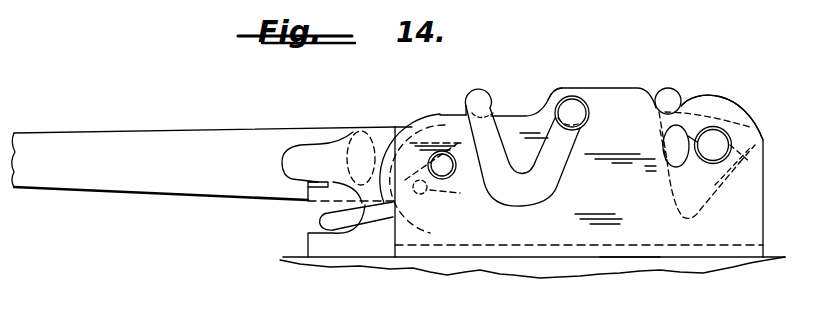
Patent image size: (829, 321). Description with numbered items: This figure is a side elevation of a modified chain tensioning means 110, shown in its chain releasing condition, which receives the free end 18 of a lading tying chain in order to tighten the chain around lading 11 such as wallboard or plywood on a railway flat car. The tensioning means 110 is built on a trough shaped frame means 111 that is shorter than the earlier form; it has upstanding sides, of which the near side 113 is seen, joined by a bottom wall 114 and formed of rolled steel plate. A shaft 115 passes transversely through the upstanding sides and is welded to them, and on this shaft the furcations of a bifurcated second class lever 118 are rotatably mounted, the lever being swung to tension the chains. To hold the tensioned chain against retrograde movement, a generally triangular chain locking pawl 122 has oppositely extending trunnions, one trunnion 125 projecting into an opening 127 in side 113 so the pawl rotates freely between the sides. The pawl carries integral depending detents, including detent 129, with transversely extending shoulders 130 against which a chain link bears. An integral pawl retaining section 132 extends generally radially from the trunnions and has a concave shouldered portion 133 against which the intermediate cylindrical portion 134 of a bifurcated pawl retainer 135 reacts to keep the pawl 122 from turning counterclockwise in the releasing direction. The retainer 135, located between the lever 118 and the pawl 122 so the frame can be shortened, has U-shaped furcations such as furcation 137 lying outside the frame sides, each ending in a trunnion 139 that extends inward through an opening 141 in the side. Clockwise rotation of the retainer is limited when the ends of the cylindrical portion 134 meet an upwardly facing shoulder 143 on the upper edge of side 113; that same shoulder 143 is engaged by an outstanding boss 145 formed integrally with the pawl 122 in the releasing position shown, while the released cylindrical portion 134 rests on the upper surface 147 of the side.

The lading 11 is at (540, 271).
The free end of chain 18 is at (268, 229).
The chain tensioning means 110 is at (233, 107).
The trough shaped frame means 111 is at (575, 85).
The upstanding side 113 is at (620, 183).
The bottom wall 114 is at (630, 271).
The shaft 115 is at (448, 178).
The bifurcated second class lever 118 is at (305, 122).
The chain locking pawl 122 is at (736, 94).
The trunnion 125 is at (718, 142).
The opening 127 is at (707, 175).
The depending detent 129 is at (787, 142).
The transversely extending shoulder 130 is at (775, 165).
The pawl retaining section 132 is at (683, 203).
The concave shouldered portion 133 is at (699, 211).
The intermediate cylindrical portion 134 is at (465, 98).
The bifurcated pawl retainer 135 is at (482, 86).
The U-shaped furcation 137 is at (540, 192).
The trunnion 139 is at (584, 127).
The opening 141 is at (580, 128).
The shoulder 143 is at (660, 106).
The outstanding boss 145 is at (672, 93).
The upper surface 147 is at (518, 104).